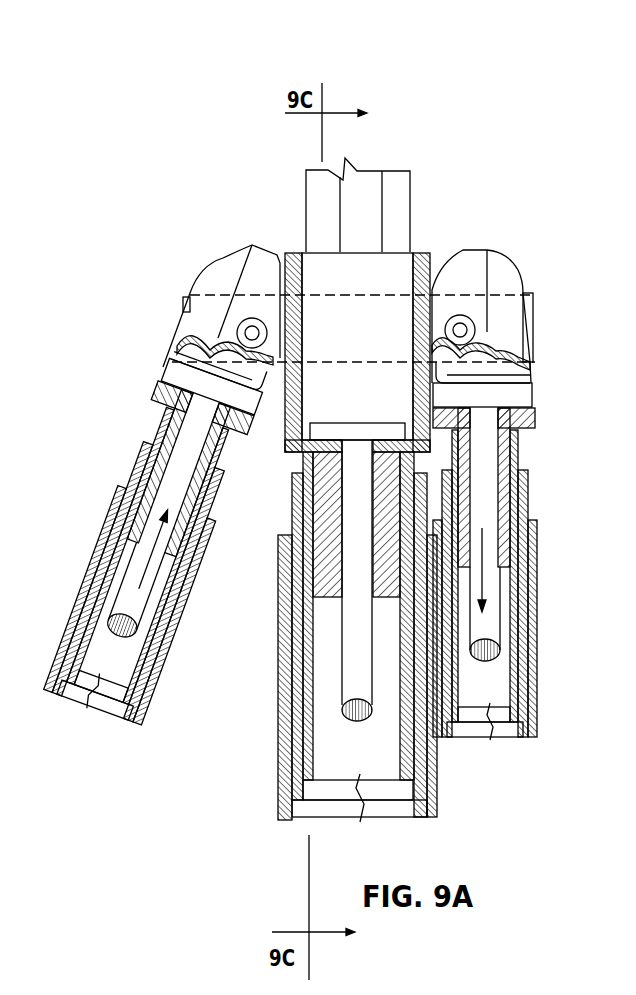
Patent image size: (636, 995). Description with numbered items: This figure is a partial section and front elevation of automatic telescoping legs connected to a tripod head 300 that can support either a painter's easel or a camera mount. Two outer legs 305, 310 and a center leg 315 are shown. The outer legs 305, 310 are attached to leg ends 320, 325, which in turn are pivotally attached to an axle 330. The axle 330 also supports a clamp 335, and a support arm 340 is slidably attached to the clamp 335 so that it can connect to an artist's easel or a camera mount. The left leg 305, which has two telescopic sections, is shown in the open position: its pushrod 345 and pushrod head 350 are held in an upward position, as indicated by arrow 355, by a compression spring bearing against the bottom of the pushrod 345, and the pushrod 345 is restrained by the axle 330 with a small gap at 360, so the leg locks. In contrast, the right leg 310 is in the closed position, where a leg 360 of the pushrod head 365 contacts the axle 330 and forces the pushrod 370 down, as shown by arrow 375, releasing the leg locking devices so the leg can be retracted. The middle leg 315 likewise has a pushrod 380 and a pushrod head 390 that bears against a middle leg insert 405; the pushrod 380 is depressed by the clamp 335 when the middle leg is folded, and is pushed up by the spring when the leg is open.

The tripod head 300 is at (476, 165).
The left outer leg 305 is at (168, 686).
The right outer leg 310 is at (544, 628).
The center leg 315 is at (440, 780).
The leg end 320 is at (232, 272).
The leg end 325 is at (505, 283).
The axle 330 is at (538, 320).
The clamp 335 is at (372, 272).
The support arm 340 is at (398, 180).
The pushrod 345 is at (127, 602).
The pushrod head 350 is at (177, 357).
The arrow 355 is at (142, 563).
The gap / leg of pushrod head 360 is at (532, 373).
The pushrod head 365 is at (517, 393).
The pushrod 370 is at (497, 655).
The arrow 375 is at (537, 522).
The pushrod 380 is at (352, 688).
The pushrod head 390 is at (323, 432).
The middle leg insert 405 is at (293, 253).